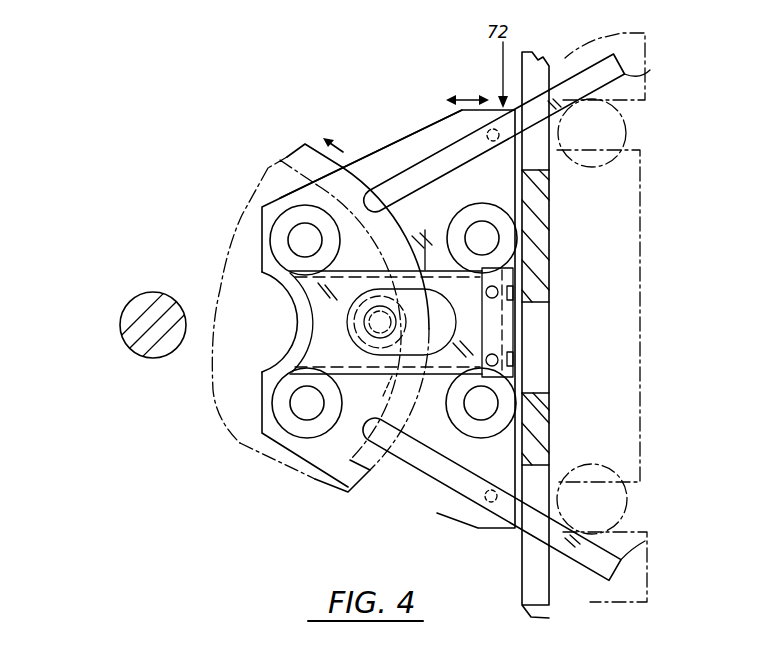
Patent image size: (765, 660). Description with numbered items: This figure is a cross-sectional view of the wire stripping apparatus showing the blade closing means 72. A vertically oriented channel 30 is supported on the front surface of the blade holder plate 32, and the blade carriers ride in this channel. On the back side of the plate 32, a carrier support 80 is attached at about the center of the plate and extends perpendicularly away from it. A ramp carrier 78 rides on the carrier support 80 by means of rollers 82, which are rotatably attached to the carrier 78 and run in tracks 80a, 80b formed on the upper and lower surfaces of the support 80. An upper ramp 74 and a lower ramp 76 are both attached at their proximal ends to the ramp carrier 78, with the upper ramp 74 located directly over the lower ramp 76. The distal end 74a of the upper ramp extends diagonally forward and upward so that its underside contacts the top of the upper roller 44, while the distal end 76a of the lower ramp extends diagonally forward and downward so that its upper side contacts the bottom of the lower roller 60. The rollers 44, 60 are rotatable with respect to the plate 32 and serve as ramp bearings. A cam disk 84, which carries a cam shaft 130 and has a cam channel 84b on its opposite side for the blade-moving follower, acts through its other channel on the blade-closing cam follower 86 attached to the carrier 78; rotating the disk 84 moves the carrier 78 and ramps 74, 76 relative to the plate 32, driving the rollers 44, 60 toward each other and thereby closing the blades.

The channel 30 is at (640, 170).
The blade holder plate 32 is at (549, 210).
The roller 44 is at (627, 139).
The lower roller 60 is at (628, 499).
The blade closing means 72 is at (503, 60).
The upper ramp 74 is at (462, 140).
The distal end of upper ramp 74a is at (650, 70).
The lower ramp 76 is at (436, 518).
The distal end of lower ramp 76a is at (645, 541).
The ramp carrier 78 is at (408, 134).
The carrier support 80 is at (296, 346).
The track 80a is at (425, 250).
The track 80b is at (389, 383).
The rollers 82 is at (288, 232).
The cam disk 84 is at (313, 146).
The cam channel 84b is at (268, 168).
The blade-closing cam follower 86 is at (350, 317).
The cam shaft 130 is at (140, 297).